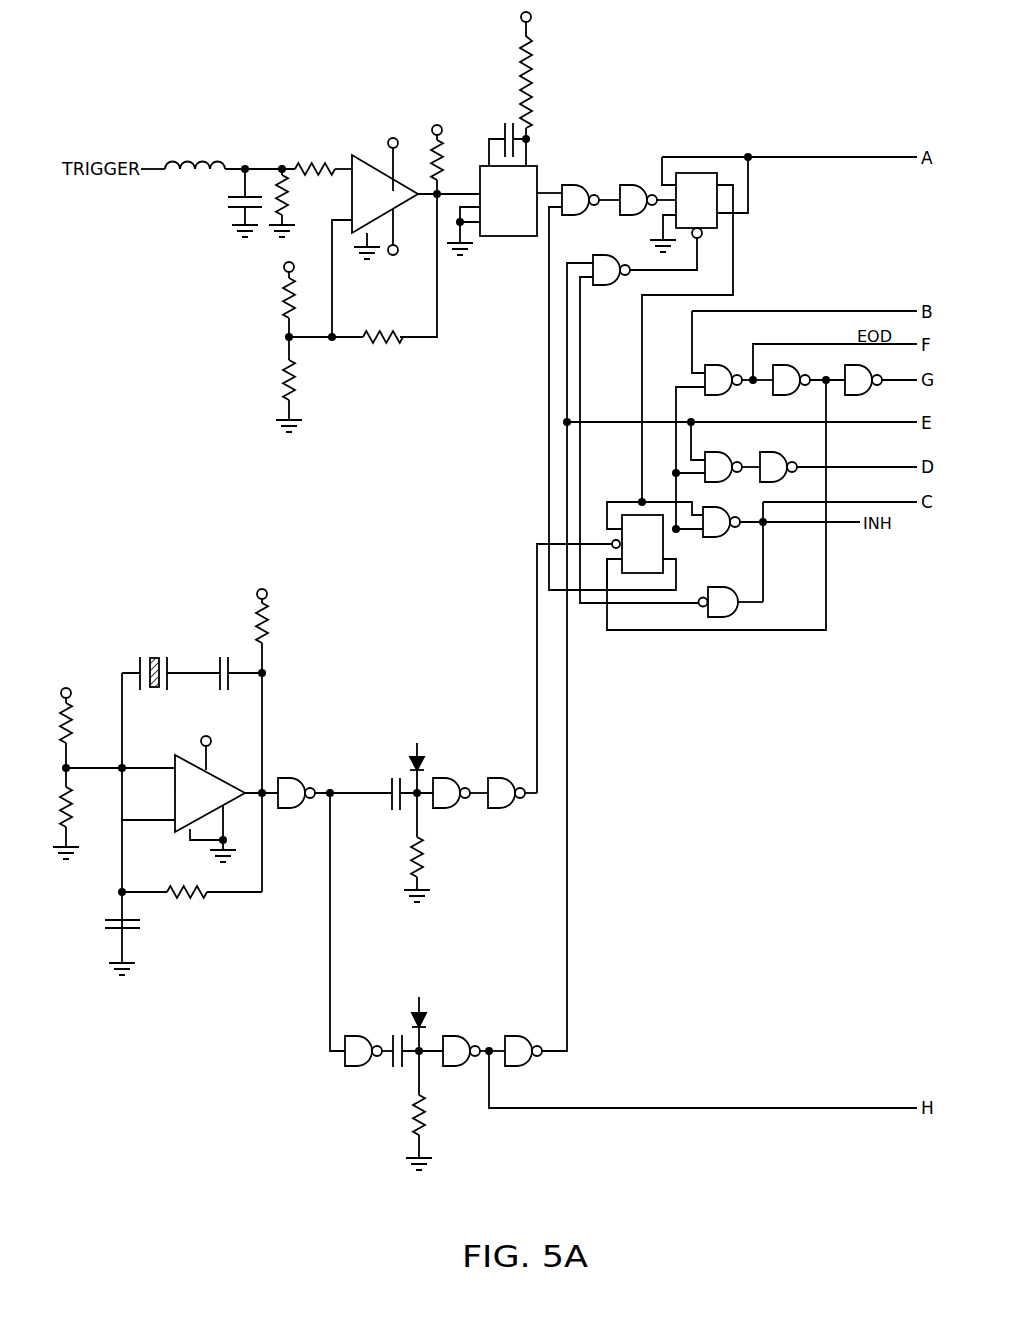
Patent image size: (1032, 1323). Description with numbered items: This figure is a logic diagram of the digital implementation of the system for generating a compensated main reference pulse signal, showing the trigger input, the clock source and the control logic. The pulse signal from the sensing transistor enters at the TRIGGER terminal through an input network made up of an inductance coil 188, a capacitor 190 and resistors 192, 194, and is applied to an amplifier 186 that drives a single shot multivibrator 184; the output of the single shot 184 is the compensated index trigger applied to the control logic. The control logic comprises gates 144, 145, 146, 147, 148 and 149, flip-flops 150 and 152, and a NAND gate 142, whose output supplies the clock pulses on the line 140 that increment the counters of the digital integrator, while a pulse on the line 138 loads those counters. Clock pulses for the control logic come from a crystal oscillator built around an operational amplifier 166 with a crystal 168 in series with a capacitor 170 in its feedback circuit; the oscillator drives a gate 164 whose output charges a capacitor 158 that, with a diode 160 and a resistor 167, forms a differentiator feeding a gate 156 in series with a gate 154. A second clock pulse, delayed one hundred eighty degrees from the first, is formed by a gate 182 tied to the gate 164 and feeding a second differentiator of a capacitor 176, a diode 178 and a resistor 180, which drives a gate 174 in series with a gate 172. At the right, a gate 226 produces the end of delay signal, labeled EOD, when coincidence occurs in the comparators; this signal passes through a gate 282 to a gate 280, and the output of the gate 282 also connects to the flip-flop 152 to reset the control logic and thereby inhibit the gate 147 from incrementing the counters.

The line 138 is at (877, 493).
The line 140 is at (884, 465).
The NAND gate 142 is at (795, 452).
The gate 144 is at (574, 180).
The gate 145 is at (632, 180).
The gate 146 is at (605, 255).
The gate 147 is at (727, 452).
The gate 148 is at (722, 537).
The gate 149 is at (722, 590).
The flip-flop 150 is at (712, 210).
The flip-flop 152 is at (657, 553).
The gate 154 is at (508, 808).
The gate 156 is at (458, 777).
The capacitor 158 is at (392, 778).
The diode 160 is at (420, 757).
The gate 164 is at (304, 767).
The operational amplifier 166 is at (212, 803).
The resistor 167 is at (412, 854).
The crystal 168 is at (153, 656).
The capacitor 170 is at (220, 656).
The gate 172 is at (521, 1037).
The gate 174 is at (458, 1037).
The capacitor 176 is at (392, 1067).
The diode 178 is at (421, 1022).
The resistor 180 is at (413, 1125).
The gate 182 is at (355, 1037).
The single shot multivibrator 184 is at (522, 212).
The amplifier 186 is at (390, 204).
The inductance coil 188 is at (202, 164).
The capacitor 190 is at (233, 209).
The resistor 192 is at (287, 194).
The resistor 194 is at (311, 166).
The gate 226 is at (718, 366).
The gate 280 is at (865, 365).
The gate 282 is at (792, 365).